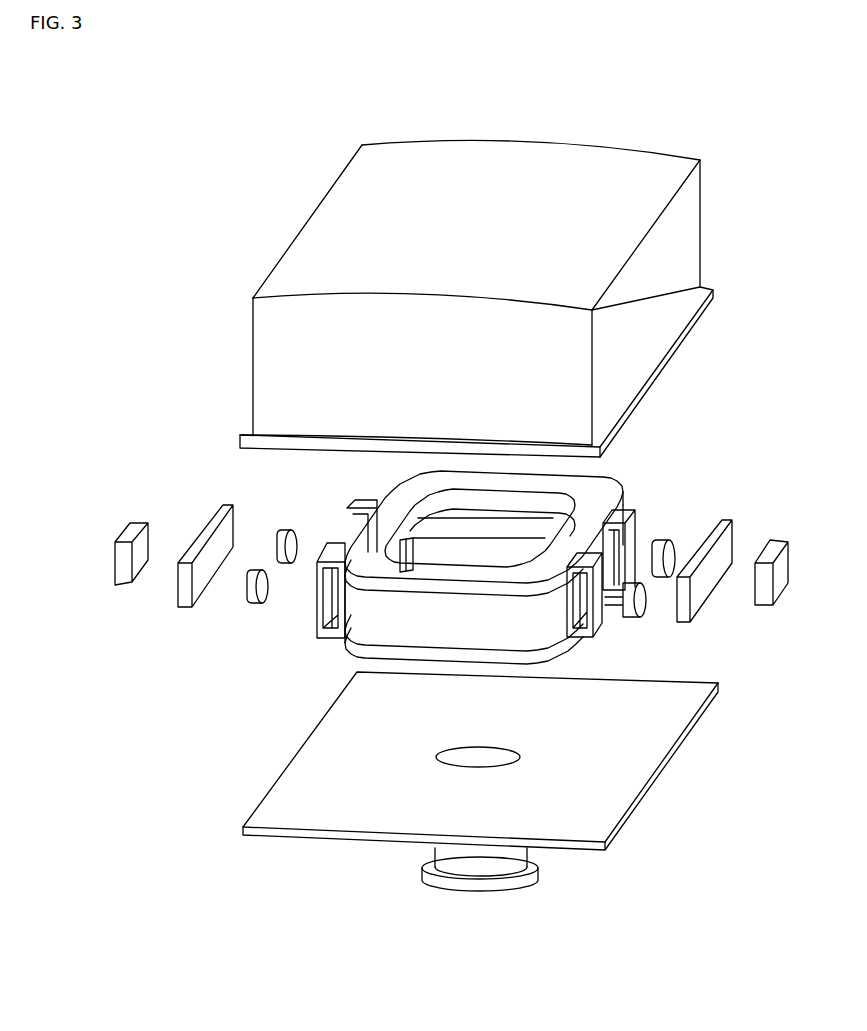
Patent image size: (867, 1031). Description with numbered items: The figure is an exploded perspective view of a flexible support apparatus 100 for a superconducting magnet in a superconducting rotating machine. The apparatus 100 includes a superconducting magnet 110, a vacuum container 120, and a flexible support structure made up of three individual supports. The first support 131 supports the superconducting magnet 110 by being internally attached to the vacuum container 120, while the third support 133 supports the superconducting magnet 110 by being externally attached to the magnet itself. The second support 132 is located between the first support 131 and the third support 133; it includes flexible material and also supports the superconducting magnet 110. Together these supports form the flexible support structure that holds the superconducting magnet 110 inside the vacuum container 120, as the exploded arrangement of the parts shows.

The flexible support apparatus 100 is at (523, 82).
The superconducting magnet 110 is at (603, 487).
The vacuum container 120 is at (308, 220).
The first support 131 is at (115, 544).
The second support 132 is at (178, 606).
The third support 133 is at (288, 564).